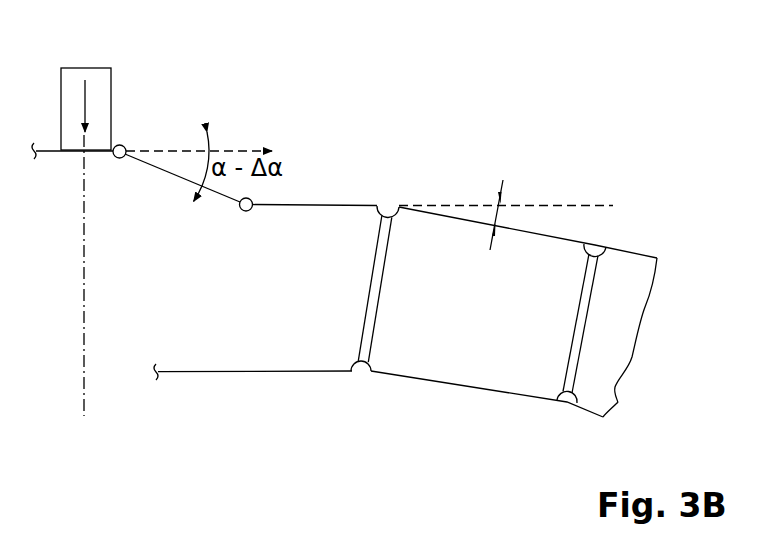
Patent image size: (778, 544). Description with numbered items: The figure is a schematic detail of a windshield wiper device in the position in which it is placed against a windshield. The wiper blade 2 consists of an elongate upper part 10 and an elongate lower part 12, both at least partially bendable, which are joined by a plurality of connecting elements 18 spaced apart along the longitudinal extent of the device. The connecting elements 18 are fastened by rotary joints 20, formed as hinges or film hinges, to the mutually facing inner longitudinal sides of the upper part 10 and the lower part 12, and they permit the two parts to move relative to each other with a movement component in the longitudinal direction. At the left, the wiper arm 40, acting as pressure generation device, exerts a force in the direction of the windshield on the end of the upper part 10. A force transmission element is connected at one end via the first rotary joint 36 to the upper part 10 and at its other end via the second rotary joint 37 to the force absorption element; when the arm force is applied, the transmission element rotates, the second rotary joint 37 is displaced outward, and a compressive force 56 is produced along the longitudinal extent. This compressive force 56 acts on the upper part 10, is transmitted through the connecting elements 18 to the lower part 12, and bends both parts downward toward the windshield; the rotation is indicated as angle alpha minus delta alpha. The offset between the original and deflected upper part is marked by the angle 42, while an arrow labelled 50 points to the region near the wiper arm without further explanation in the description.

The wiper blade 2 is at (645, 397).
The elongate upper part 10 is at (313, 208).
The elongate lower part 12 is at (312, 368).
The connecting elements 18 is at (378, 278).
The rotary joints 20 is at (389, 204).
The first rotary joint 36 is at (124, 146).
The second rotary joint 37 is at (243, 212).
The wiper arm 40 is at (110, 76).
The angle 42 is at (517, 205).
The coordinate region 50 is at (212, 94).
The compressive force 56 is at (250, 147).